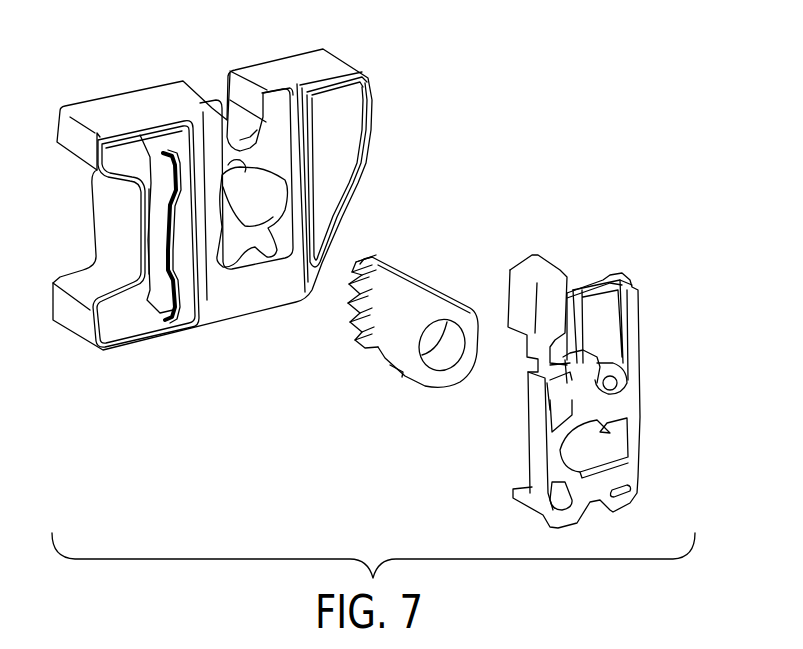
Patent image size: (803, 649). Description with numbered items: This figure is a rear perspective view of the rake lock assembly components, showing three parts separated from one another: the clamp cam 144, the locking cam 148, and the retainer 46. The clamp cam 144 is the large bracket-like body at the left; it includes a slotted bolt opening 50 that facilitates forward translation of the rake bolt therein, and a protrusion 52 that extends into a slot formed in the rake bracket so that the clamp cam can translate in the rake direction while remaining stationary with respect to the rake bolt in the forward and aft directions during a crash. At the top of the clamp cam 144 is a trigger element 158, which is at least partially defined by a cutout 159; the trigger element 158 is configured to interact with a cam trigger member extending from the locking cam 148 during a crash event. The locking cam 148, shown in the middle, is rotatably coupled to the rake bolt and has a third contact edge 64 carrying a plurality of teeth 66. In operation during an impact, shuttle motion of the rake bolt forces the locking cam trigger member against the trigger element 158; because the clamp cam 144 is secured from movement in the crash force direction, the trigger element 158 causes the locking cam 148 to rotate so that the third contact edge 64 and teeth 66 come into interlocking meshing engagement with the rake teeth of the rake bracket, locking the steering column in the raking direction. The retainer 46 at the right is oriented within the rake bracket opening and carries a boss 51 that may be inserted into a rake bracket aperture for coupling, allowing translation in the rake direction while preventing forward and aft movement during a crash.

The clamp cam 144 is at (405, 108).
The trigger element 158 is at (255, 163).
The cutout 159 is at (228, 160).
The slotted bolt opening 50 is at (265, 199).
The protrusion 52 is at (180, 312).
The locking cam 148 is at (399, 415).
The third contact edge 64 is at (360, 345).
The teeth 66 is at (372, 257).
The retainer 46 is at (647, 277).
The boss 51 is at (598, 366).